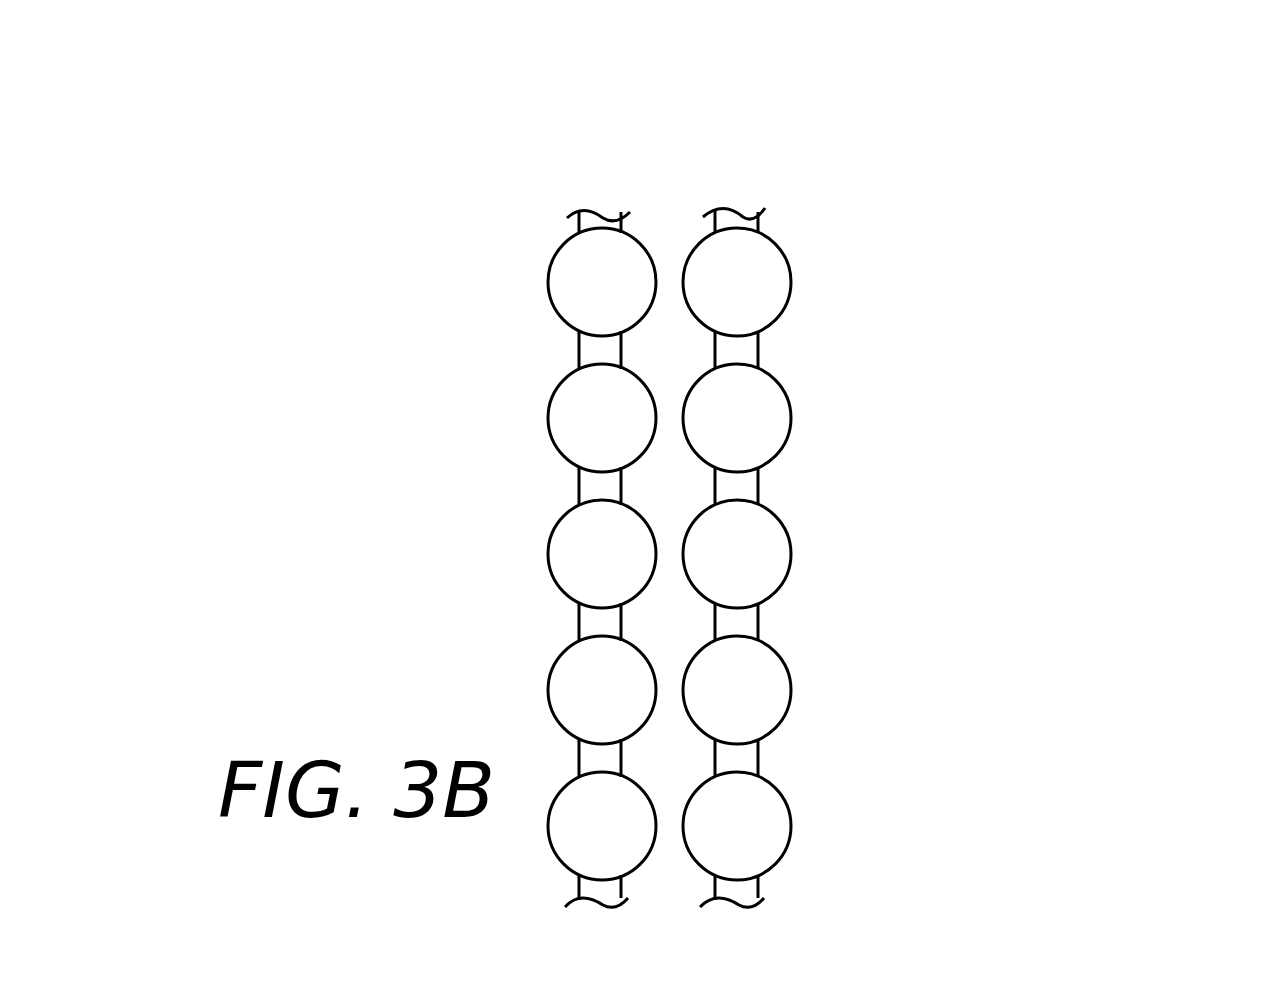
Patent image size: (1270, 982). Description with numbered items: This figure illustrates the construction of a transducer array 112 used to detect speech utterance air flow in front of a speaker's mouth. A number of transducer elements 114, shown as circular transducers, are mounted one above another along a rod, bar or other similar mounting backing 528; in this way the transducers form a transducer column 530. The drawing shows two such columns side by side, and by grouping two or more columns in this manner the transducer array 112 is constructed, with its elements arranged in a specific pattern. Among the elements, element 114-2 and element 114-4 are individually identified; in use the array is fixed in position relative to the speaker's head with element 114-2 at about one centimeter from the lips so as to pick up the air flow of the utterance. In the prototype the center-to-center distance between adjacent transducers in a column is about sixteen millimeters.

The transducer array 112 is at (810, 267).
The transducer element 114 is at (770, 290).
The transducer element 114-2 is at (767, 422).
The transducer element 114-4 is at (768, 683).
The mounting backing 528 is at (760, 757).
The transducer column 530 is at (743, 202).